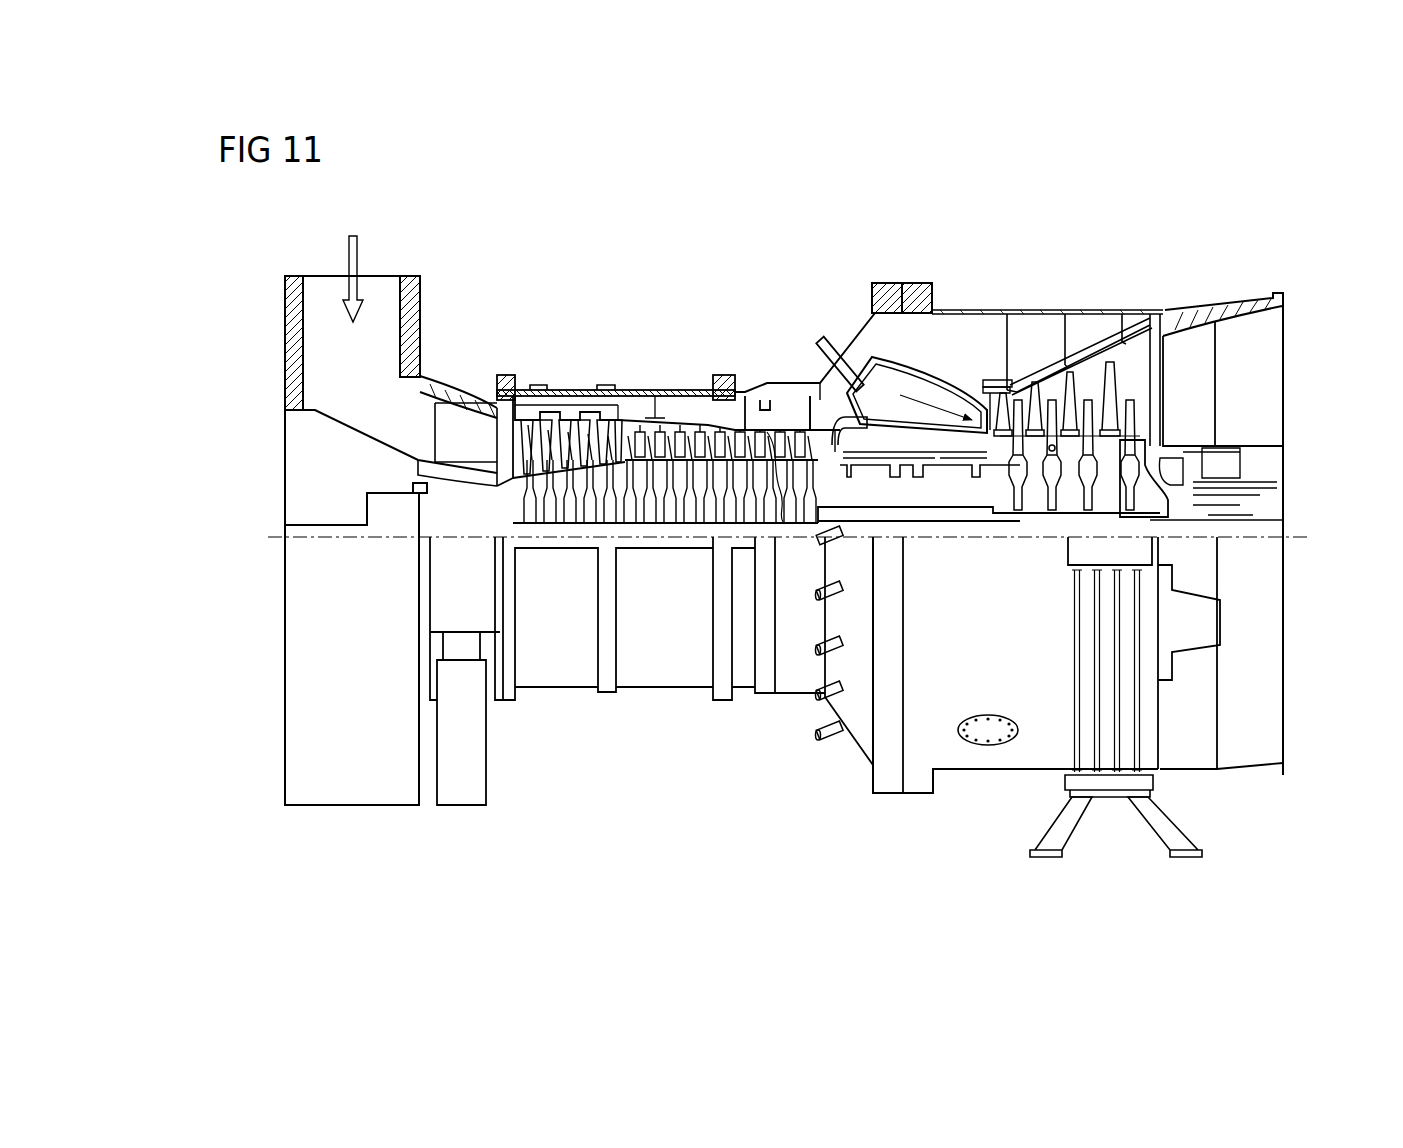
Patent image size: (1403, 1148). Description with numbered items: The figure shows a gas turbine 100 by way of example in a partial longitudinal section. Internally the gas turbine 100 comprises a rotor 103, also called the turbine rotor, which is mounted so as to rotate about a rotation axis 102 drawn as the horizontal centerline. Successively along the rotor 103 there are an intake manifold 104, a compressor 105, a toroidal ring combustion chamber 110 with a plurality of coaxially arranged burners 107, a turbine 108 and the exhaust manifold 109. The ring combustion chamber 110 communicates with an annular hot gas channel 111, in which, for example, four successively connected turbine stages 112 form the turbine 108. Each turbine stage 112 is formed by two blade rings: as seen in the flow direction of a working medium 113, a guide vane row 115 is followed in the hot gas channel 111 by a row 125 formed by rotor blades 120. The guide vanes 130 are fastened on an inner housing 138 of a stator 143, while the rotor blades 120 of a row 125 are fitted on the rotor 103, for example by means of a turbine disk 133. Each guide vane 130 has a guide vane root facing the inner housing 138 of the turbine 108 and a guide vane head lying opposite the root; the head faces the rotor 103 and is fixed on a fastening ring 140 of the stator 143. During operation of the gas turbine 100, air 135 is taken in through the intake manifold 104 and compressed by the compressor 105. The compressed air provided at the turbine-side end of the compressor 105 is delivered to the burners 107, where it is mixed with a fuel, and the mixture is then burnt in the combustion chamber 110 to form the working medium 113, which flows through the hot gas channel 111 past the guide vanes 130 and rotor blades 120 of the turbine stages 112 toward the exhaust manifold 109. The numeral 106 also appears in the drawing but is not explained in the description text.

The gas turbine 100 is at (651, 283).
The rotation axis 102 is at (281, 537).
The rotor 103 is at (840, 507).
The intake manifold 104 is at (410, 331).
The compressor 105 is at (590, 373).
The combustion chamber 106 is at (920, 395).
The burners 107 is at (818, 338).
The turbine 108 is at (1008, 285).
The exhaust manifold 109 is at (1215, 305).
The combustion chamber 110 is at (900, 372).
The hot gas channel 111 is at (1137, 382).
The turbine stages 112 is at (1118, 285).
The working medium 113 is at (900, 372).
The guide vane row 115 is at (1088, 333).
The rotor blades 120 is at (1068, 420).
The row 125 is at (1138, 320).
The guide vanes 130 is at (1038, 420).
The turbine disk 133 is at (1150, 497).
The air 135 is at (357, 268).
The inner housing 138 is at (1032, 345).
The fastening ring 140 is at (997, 413).
The stator 143 is at (975, 330).